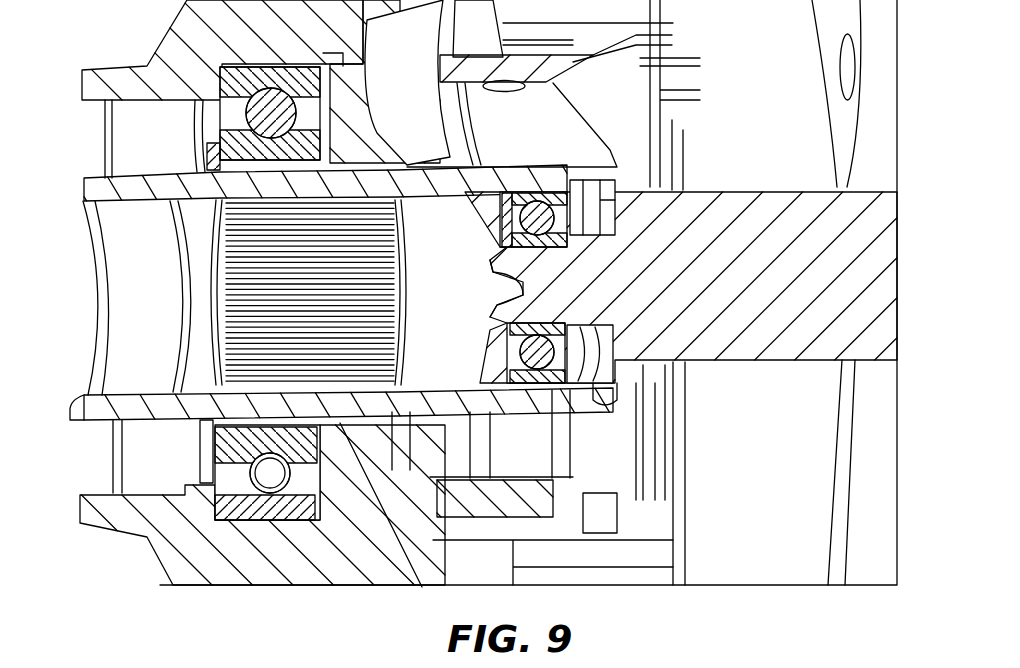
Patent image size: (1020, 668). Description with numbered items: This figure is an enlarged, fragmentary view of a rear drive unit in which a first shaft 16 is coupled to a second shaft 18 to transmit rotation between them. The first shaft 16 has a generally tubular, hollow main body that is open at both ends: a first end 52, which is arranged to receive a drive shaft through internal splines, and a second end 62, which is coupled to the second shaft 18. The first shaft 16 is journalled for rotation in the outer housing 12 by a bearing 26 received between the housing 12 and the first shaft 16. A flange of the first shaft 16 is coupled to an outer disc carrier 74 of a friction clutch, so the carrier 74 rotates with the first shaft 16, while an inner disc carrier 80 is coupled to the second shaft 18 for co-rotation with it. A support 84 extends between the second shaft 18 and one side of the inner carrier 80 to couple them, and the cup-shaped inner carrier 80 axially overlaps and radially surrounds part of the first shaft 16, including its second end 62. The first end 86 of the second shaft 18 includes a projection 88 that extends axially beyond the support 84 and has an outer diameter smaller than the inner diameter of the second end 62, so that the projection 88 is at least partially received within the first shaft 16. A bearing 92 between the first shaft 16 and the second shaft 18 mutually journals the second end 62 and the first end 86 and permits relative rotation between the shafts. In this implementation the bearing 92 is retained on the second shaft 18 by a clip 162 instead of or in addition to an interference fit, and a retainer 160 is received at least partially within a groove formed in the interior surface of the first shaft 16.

The outer housing 12 is at (168, 62).
The first shaft 16 is at (78, 323).
The second shaft 18 is at (866, 228).
The bearing 26 is at (260, 535).
The first end 52 is at (80, 410).
The second end 62 is at (608, 382).
The outer disc carrier 74 is at (668, 548).
The inner disc carrier 80 is at (568, 62).
The support 84 is at (645, 452).
The first end 86 is at (492, 301).
The projection 88 is at (500, 268).
The bearing 92 is at (486, 355).
The retainer 160 is at (594, 210).
The clip 162 is at (505, 247).